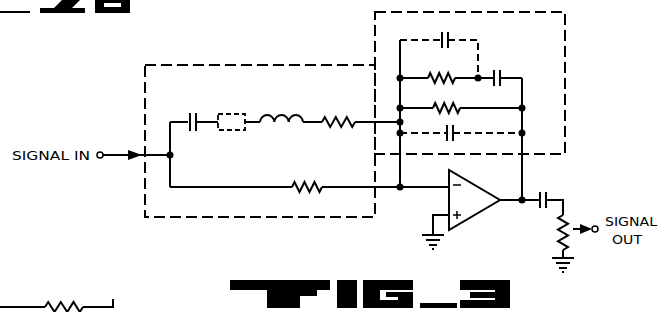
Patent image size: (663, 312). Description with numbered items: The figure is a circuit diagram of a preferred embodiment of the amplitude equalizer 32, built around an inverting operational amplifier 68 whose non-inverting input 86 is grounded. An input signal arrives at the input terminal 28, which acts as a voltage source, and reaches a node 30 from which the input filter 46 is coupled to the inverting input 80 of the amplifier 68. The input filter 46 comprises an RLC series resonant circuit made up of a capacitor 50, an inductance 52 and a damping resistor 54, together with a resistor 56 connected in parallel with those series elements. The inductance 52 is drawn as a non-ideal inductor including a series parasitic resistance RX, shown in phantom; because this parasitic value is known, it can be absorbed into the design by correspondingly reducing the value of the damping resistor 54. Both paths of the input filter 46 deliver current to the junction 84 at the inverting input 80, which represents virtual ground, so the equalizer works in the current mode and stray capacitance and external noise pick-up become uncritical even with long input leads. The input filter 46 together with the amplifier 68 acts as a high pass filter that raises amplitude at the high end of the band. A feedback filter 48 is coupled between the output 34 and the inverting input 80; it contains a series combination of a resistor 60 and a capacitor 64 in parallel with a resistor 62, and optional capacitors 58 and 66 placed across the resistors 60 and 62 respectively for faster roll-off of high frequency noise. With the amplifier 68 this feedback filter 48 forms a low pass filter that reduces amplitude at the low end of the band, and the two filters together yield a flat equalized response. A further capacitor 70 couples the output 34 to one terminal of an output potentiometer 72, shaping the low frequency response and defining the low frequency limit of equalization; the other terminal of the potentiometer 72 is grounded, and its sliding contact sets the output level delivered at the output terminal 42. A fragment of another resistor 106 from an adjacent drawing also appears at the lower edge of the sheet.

The input terminal 28 is at (100, 151).
The input junction node 30 is at (169, 160).
The amplitude equalizer 32 is at (245, 50).
The output 34 is at (521, 204).
The output terminal 42 is at (594, 225).
The input filter 46 is at (287, 69).
The feedback filter 48 is at (562, 53).
The capacitor 50 is at (200, 111).
The series parasitic resistance RX is at (239, 110).
The inductance 52 is at (291, 104).
The damping resistor 54 is at (361, 110).
The resistor 56 is at (309, 176).
The capacitor 58 is at (439, 47).
The resistor 60 is at (446, 69).
The resistor 62 is at (461, 100).
The capacitor 64 is at (508, 73).
The capacitor 66 is at (461, 128).
The inverting operational amplifier 68 is at (475, 186).
The capacitor 70 is at (548, 193).
The output potentiometer 72 is at (555, 243).
The inverting input 80 is at (449, 183).
The junction 84 is at (400, 191).
The non-inverting input 86 is at (449, 214).
The resistor 106 is at (56, 298).